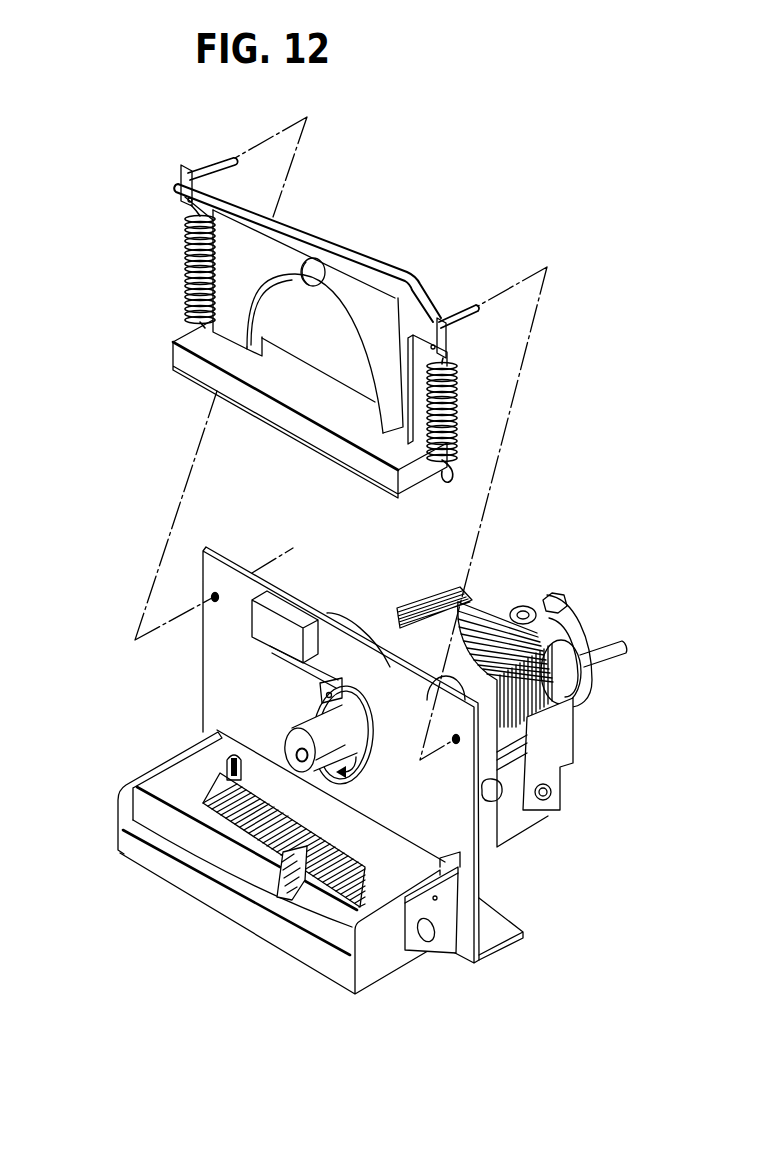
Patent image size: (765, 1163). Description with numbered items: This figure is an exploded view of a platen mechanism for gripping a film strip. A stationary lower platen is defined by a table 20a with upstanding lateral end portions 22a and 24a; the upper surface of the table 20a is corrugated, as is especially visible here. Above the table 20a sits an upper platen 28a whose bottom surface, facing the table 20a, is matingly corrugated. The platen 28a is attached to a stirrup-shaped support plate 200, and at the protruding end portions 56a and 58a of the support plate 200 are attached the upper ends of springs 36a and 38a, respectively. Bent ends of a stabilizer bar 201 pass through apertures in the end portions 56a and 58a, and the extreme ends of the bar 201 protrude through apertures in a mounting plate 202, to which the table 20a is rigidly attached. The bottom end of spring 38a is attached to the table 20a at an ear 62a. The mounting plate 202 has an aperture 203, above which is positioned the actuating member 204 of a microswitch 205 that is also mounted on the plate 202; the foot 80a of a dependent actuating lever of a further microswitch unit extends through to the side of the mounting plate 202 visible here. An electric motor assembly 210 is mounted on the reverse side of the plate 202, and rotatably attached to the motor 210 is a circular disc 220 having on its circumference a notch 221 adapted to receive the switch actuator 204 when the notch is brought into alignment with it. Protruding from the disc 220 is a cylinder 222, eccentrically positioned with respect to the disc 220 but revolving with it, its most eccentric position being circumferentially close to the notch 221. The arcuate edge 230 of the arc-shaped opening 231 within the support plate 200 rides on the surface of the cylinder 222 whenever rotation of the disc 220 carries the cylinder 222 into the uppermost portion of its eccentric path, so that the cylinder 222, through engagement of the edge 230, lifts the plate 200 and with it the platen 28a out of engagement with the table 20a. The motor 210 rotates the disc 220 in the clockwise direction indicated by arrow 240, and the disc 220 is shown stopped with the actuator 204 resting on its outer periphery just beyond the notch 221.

The table 20a is at (333, 913).
The upstanding lateral end portion 22a is at (173, 755).
The upstanding lateral end portion 24a is at (435, 858).
The upper platen 28a is at (175, 340).
The spring 36a is at (188, 277).
The spring 38a is at (460, 412).
The protruding end portion 56a is at (183, 172).
The protruding end portion 58a is at (433, 317).
The ear 62a is at (455, 955).
The foot 80a is at (222, 800).
The support plate 200 is at (392, 286).
The stabilizer bar 201 is at (347, 238).
The mounting plate 202 is at (480, 897).
The aperture 203 is at (373, 777).
The actuating member 204 is at (340, 690).
The microswitch 205 is at (290, 612).
The electric motor assembly 210 is at (490, 620).
The circular disc 220 is at (298, 775).
The notch 221 is at (368, 708).
The cylinder 222 is at (290, 730).
The arcuate edge 230 is at (353, 320).
The arc-shaped opening 231 is at (302, 337).
The arrow 240 is at (361, 785).